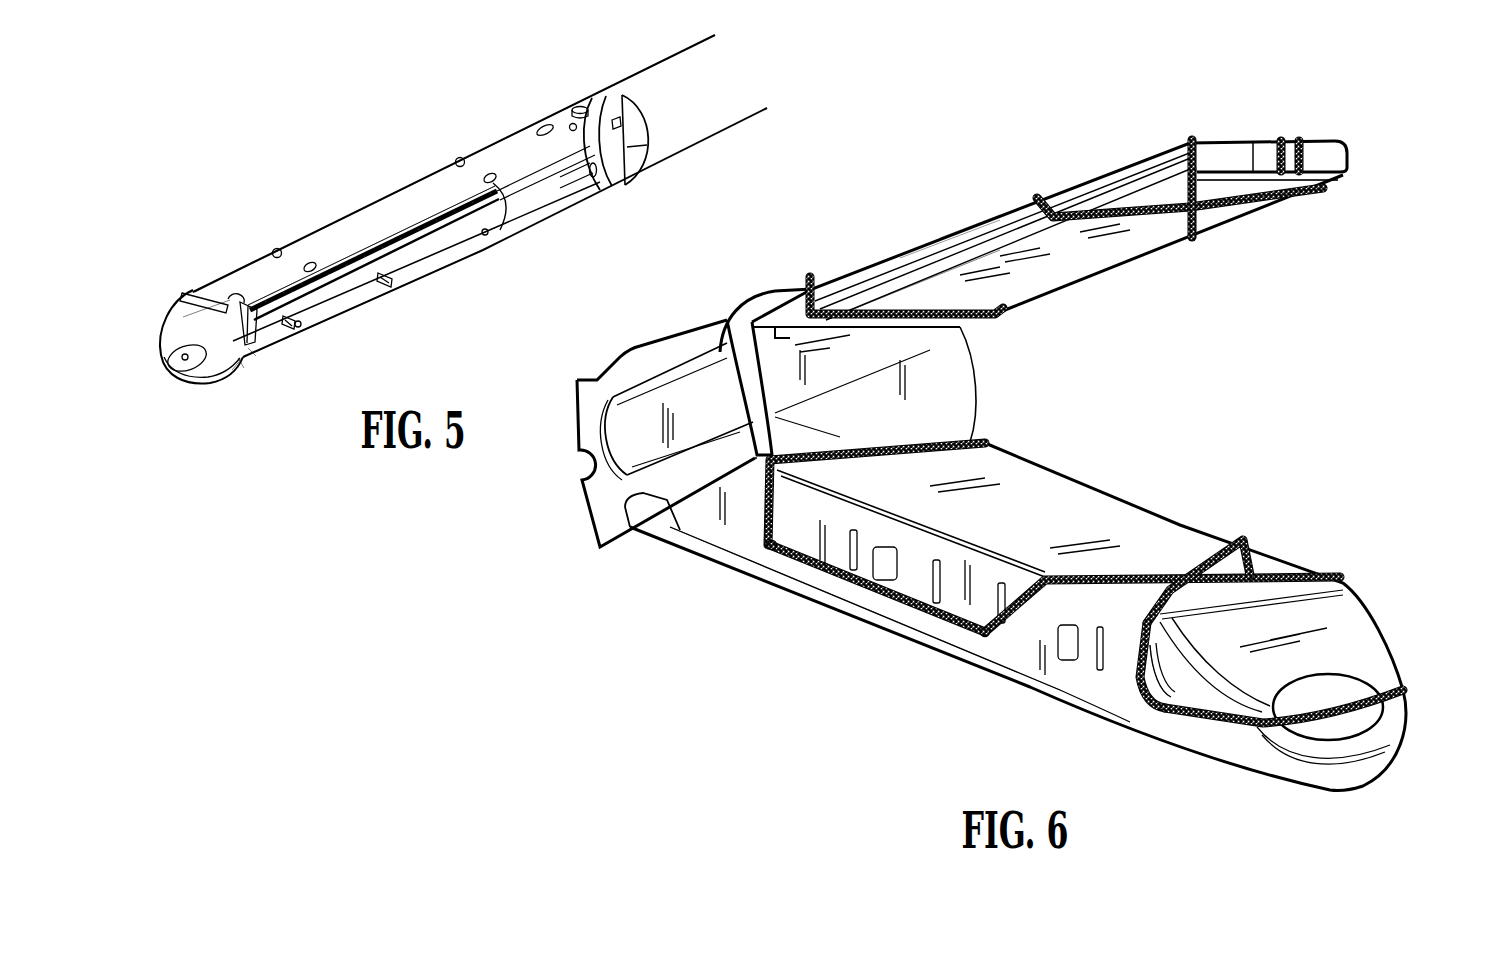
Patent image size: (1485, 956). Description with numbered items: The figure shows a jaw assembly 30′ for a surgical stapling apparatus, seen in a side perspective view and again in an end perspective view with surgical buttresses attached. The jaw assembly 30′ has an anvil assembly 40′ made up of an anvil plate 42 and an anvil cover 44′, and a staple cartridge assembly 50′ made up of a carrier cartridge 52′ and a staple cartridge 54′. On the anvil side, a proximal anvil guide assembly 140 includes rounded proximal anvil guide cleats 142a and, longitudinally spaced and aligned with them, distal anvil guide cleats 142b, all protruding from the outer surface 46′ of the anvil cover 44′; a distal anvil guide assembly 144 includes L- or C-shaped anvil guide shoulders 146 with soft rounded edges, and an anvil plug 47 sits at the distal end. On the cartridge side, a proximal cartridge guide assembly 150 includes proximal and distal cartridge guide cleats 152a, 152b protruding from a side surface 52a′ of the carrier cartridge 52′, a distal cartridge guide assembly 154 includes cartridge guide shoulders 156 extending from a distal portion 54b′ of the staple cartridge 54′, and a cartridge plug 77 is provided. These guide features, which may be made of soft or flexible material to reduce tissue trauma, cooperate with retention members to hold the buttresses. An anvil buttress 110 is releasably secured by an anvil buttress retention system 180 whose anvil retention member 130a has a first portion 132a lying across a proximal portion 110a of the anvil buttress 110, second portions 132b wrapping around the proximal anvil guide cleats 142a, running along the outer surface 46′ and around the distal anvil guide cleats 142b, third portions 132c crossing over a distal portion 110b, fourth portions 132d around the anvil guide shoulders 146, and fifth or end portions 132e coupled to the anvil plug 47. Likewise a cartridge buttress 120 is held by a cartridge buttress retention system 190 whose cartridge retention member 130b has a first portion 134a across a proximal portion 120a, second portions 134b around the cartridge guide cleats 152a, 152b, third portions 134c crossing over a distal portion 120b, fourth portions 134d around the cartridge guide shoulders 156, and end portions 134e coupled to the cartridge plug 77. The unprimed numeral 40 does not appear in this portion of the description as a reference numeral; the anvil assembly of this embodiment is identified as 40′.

In FIG. 5, the jaw assembly 30′ is at (465, 130).
In FIG. 6, the jaw assembly 30′ is at (715, 298).
In FIG. 5, the anvil assembly 40 is at (213, 254).
In FIG. 5, the anvil cover 44′ is at (237, 250).
In FIG. 6, the anvil cover 44′ is at (977, 227).
In FIG. 5, the outer surface of the anvil cover 46′ is at (253, 260).
In FIG. 5, the proximal anvil guide assembly 140 is at (425, 160).
In FIG. 5, the proximal anvil guide cleats 142a is at (463, 156).
In FIG. 5, the distal anvil guide cleats 142b is at (275, 249).
In FIG. 5, the distal anvil guide assembly 144 is at (190, 278).
In FIG. 5, the anvil guide shoulders 146 is at (181, 296).
In FIG. 5, the anvil plug 47 is at (184, 318).
In FIG. 6, the anvil plug 47 is at (1318, 151).
In FIG. 5, the staple cartridge 54′ is at (147, 343).
In FIG. 6, the staple cartridge 54′ is at (1340, 612).
In FIG. 5, the cartridge plug 77 is at (180, 361).
In FIG. 6, the cartridge plug 77 is at (1347, 693).
In FIG. 5, the distal portion of the staple cartridge 54b′ is at (233, 372).
In FIG. 5, the distal cartridge guide assembly 154 is at (241, 374).
In FIG. 5, the cartridge guide shoulders 156 is at (252, 354).
In FIG. 6, the cartridge guide shoulders 156 is at (1142, 690).
In FIG. 5, the staple cartridge assembly 50′ is at (313, 345).
In FIG. 6, the staple cartridge assembly 50′ is at (911, 655).
In FIG. 5, the side surface of the cartridge carrier 52a′ is at (430, 260).
In FIG. 6, the carrier cartridge 52′ is at (968, 620).
In FIG. 5, the proximal cartridge guide assembly 150 is at (340, 326).
In FIG. 5, the proximal cartridge guide cleats 152a is at (488, 236).
In FIG. 6, the proximal cartridge guide cleats 152a is at (771, 556).
In FIG. 5, the distal cartridge guide cleats 152b is at (302, 325).
In FIG. 6, the distal cartridge guide cleats 152b is at (985, 642).
In FIG. 6, the anvil buttress 110 is at (1077, 270).
In FIG. 6, the proximal portion of the anvil buttress 110a is at (885, 312).
In FIG. 6, the distal portion of the anvil buttress 110b is at (1285, 205).
In FIG. 6, the cartridge buttress 120 is at (1115, 513).
In FIG. 6, the proximal portion of the cartridge buttress 120a is at (968, 470).
In FIG. 6, the distal portion of the cartridge buttress 120b is at (1333, 577).
In FIG. 6, the anvil retention member 130a is at (797, 270).
In FIG. 6, the cartridge retention member 130b is at (752, 548).
In FIG. 6, the first portion of the anvil retention member 132a is at (843, 310).
In FIG. 6, the second portions of the anvil retention member 132b is at (815, 280).
In FIG. 6, the third portions of the anvil retention member 132c is at (1250, 208).
In FIG. 6, the fourth portions of the anvil retention member 132d is at (1189, 143).
In FIG. 6, the fifth or end portions of the anvil retention member 132e is at (1301, 141).
In FIG. 6, the first portion of the cartridge retention member 134a is at (918, 447).
In FIG. 6, the second portions of the cartridge retention member 134b is at (832, 580).
In FIG. 6, the third portions of the cartridge retention member 134c is at (1280, 565).
In FIG. 6, the fourth portions of the cartridge retention member 134d is at (1135, 670).
In FIG. 6, the fifth or end portions of the cartridge retention member 134e is at (1330, 700).
In FIG. 6, the anvil assembly 40′ is at (945, 226).
In FIG. 6, the anvil plate 42 is at (1352, 166).
In FIG. 6, the anvil buttress retention system 180 is at (1200, 105).
In FIG. 6, the cartridge buttress retention system 190 is at (1325, 550).